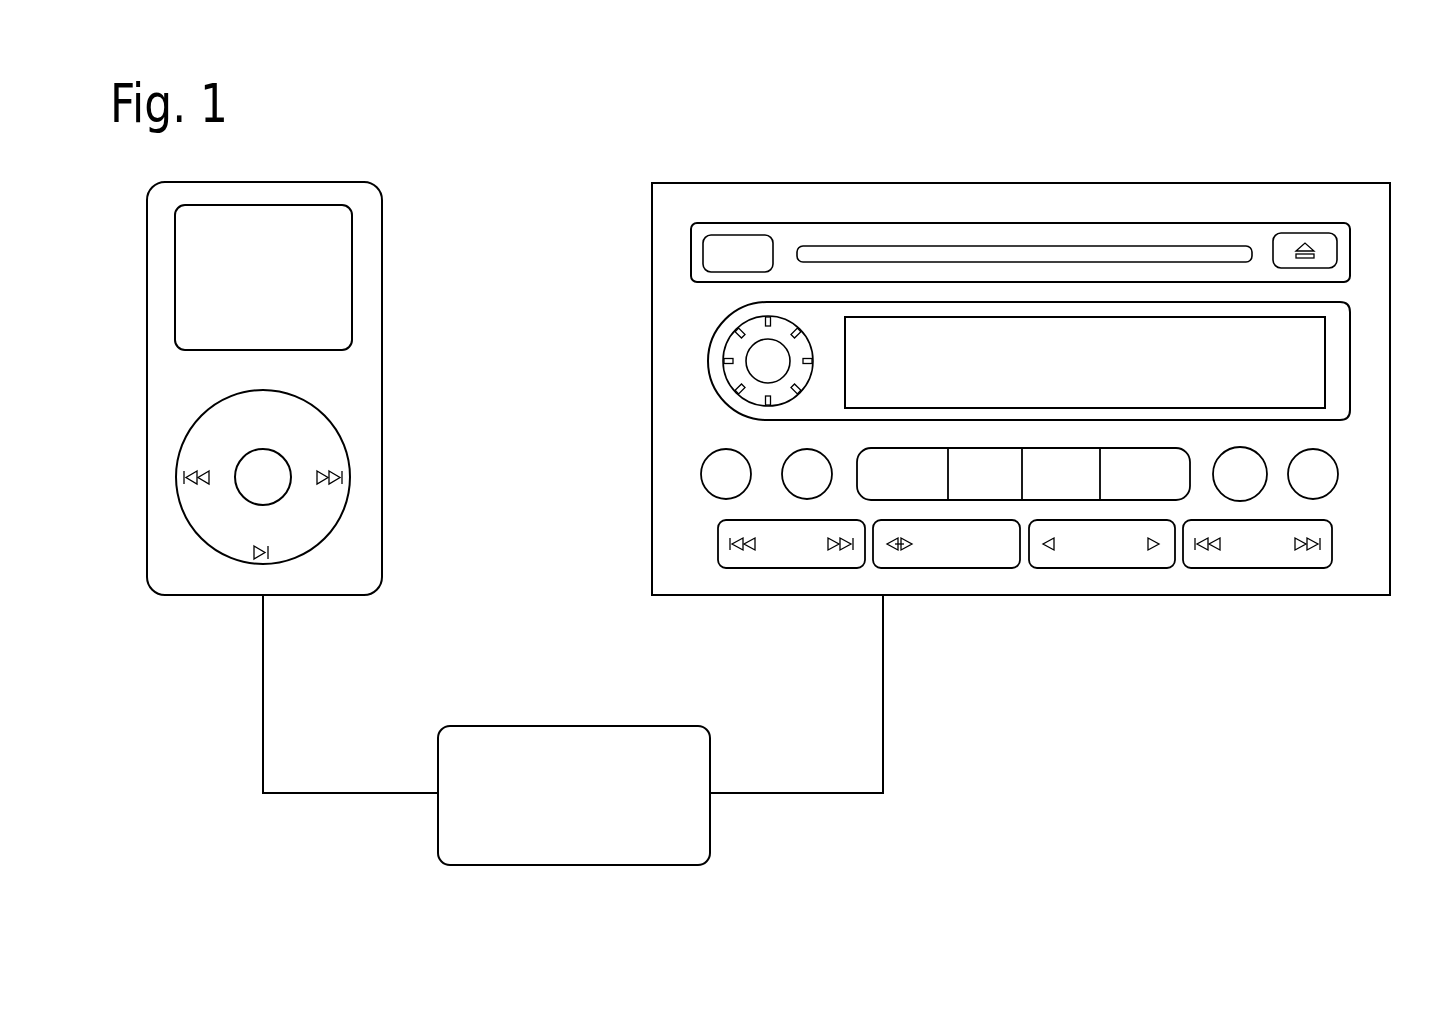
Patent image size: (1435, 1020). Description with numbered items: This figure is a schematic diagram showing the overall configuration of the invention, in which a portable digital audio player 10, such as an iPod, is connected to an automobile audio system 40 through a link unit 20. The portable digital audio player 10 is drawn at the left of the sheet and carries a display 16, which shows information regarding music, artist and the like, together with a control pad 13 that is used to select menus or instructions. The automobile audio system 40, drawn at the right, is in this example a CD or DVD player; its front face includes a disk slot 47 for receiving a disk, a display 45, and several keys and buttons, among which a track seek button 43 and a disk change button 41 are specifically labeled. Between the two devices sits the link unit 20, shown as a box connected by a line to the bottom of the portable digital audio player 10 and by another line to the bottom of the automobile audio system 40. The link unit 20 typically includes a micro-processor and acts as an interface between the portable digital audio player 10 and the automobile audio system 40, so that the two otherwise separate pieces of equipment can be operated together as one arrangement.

The portable digital audio player 10 is at (352, 156).
The control pad 13 is at (325, 452).
The display 16 is at (332, 308).
The link unit 20 is at (550, 706).
The automobile audio system 40 is at (968, 148).
The disk change button 41 is at (1133, 565).
The track seek button 43 is at (800, 565).
The display 45 is at (1308, 378).
The disk slot 47 is at (1088, 255).